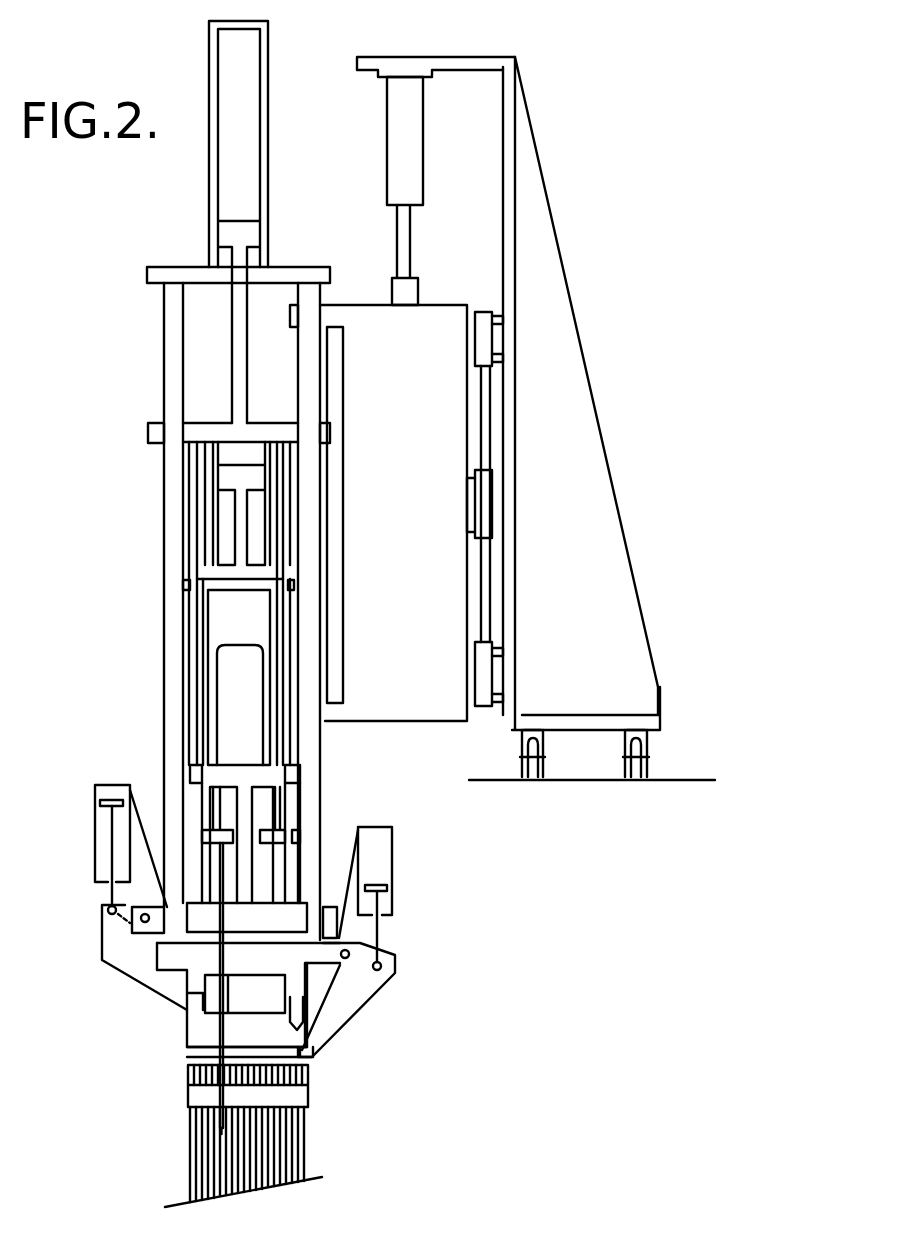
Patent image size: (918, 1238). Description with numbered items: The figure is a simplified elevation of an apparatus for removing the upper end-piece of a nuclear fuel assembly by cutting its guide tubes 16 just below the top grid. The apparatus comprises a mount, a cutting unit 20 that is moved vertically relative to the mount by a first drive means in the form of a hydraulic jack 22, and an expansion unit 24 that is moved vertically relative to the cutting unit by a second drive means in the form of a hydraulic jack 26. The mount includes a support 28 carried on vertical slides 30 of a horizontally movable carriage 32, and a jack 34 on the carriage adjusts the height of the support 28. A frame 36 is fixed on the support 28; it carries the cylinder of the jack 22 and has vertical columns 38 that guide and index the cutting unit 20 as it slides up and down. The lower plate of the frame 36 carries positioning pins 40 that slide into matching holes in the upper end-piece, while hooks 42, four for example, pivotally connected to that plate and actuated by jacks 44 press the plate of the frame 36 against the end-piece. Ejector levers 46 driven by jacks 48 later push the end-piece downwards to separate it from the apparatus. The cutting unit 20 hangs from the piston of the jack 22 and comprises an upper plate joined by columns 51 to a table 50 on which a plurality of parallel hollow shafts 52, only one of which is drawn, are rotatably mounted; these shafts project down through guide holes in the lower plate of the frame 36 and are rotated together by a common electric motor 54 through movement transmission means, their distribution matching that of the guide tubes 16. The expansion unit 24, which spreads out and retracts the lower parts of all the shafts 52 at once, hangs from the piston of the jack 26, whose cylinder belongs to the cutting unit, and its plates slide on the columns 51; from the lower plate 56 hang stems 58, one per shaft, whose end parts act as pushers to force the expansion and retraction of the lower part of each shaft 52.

The guide tubes 16 is at (287, 1062).
The cutting unit 20 is at (146, 420).
The hydraulic jack 22 is at (212, 194).
The expansion unit 24 is at (202, 687).
The hydraulic jack 26 is at (218, 525).
The support 28 is at (428, 335).
The vertical slides 30 is at (483, 413).
The carriage 32 is at (566, 522).
The jack 34 is at (408, 128).
The frame 36 is at (170, 320).
The vertical columns 38 is at (303, 610).
The positioning pins 40 is at (305, 1010).
The hooks 42 is at (355, 987).
The jacks 44 is at (375, 857).
The ejector levers 46 is at (128, 957).
The jacks 48 is at (107, 847).
The table 50 is at (287, 917).
The columns 51 is at (197, 655).
The hollow shafts 52 is at (222, 1060).
The electric motor 54 is at (237, 722).
The lower plate 56 is at (213, 835).
The stems 58 is at (218, 878).